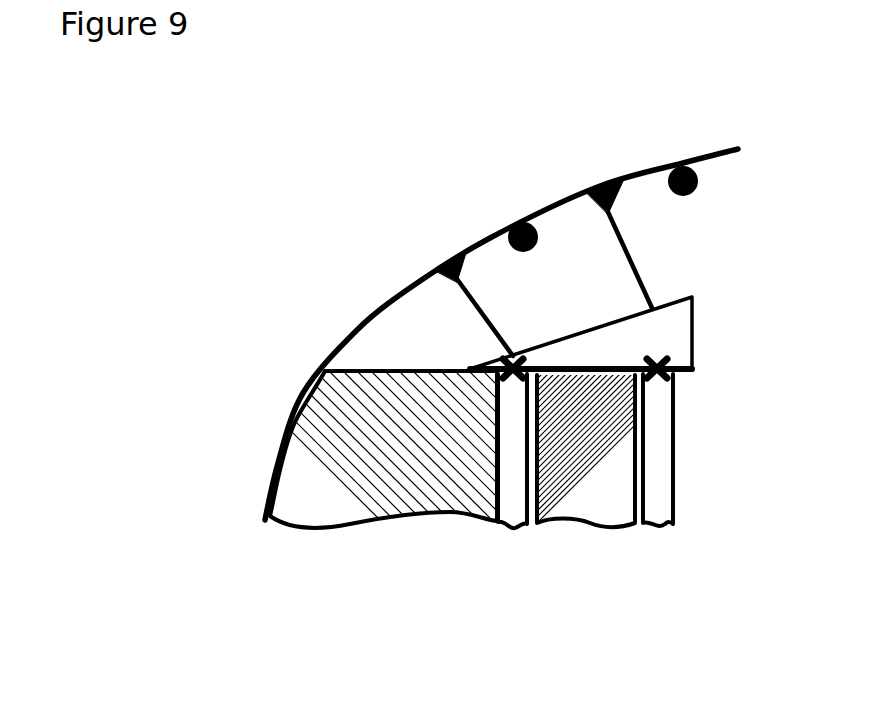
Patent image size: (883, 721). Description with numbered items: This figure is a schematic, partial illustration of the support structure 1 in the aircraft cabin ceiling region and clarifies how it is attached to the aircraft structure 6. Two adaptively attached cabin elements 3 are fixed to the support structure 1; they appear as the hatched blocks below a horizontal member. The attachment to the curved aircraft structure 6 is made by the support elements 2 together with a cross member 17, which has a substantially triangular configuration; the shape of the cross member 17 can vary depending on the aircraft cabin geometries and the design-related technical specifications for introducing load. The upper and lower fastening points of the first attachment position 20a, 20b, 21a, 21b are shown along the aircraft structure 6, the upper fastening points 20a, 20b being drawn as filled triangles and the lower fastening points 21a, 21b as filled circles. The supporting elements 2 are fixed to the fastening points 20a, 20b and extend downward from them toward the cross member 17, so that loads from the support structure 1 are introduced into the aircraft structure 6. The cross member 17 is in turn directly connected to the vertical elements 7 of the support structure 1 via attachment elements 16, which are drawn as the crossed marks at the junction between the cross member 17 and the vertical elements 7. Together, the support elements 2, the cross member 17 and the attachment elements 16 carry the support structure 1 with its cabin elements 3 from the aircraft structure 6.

The support structure 1 is at (719, 498).
The support elements 2 is at (470, 320).
The cabin elements 3 is at (372, 503).
The aircraft structure 6 is at (282, 428).
The vertical elements 7 is at (513, 508).
The attachment elements 16 is at (482, 367).
The cross member 17 is at (694, 352).
The fastening point of the first attachment position 20a is at (454, 262).
The fastening point of the first attachment position 20b is at (601, 188).
The fastening point of the first attachment position 21a is at (516, 223).
The fastening point of the first attachment position 21b is at (681, 166).